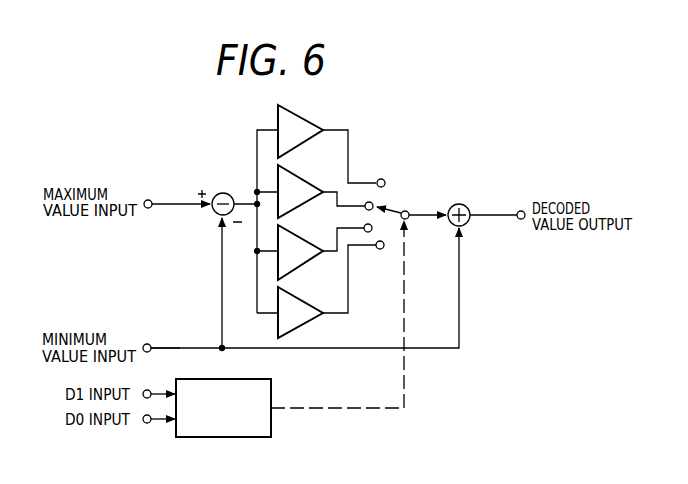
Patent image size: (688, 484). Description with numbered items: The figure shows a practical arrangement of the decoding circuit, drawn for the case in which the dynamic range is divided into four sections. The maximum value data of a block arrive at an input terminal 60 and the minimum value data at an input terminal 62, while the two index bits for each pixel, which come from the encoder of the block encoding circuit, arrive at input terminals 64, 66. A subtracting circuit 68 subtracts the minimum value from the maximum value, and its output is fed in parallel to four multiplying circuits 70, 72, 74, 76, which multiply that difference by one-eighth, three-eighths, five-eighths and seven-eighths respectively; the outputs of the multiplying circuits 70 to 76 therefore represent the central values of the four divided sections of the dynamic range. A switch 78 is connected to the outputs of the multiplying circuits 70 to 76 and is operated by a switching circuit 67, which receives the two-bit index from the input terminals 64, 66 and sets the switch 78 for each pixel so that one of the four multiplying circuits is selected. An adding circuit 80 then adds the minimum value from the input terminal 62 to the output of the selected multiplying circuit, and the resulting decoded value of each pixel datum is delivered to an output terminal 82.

The input terminal of the maximum value data 60 is at (148, 198).
The input terminal of the minimum value data 62 is at (148, 343).
The input terminal of index D1 64 is at (148, 390).
The input terminal of index D0 66 is at (148, 423).
The switching circuit 67 is at (246, 437).
The subtracting circuit 68 is at (223, 192).
The multiplying circuit 70 is at (304, 111).
The multiplying circuit 72 is at (304, 173).
The multiplying circuit 74 is at (292, 246).
The multiplying circuit 76 is at (304, 294).
The switch 78 is at (404, 200).
The adding circuit 80 is at (459, 202).
The output terminal 82 is at (520, 210).